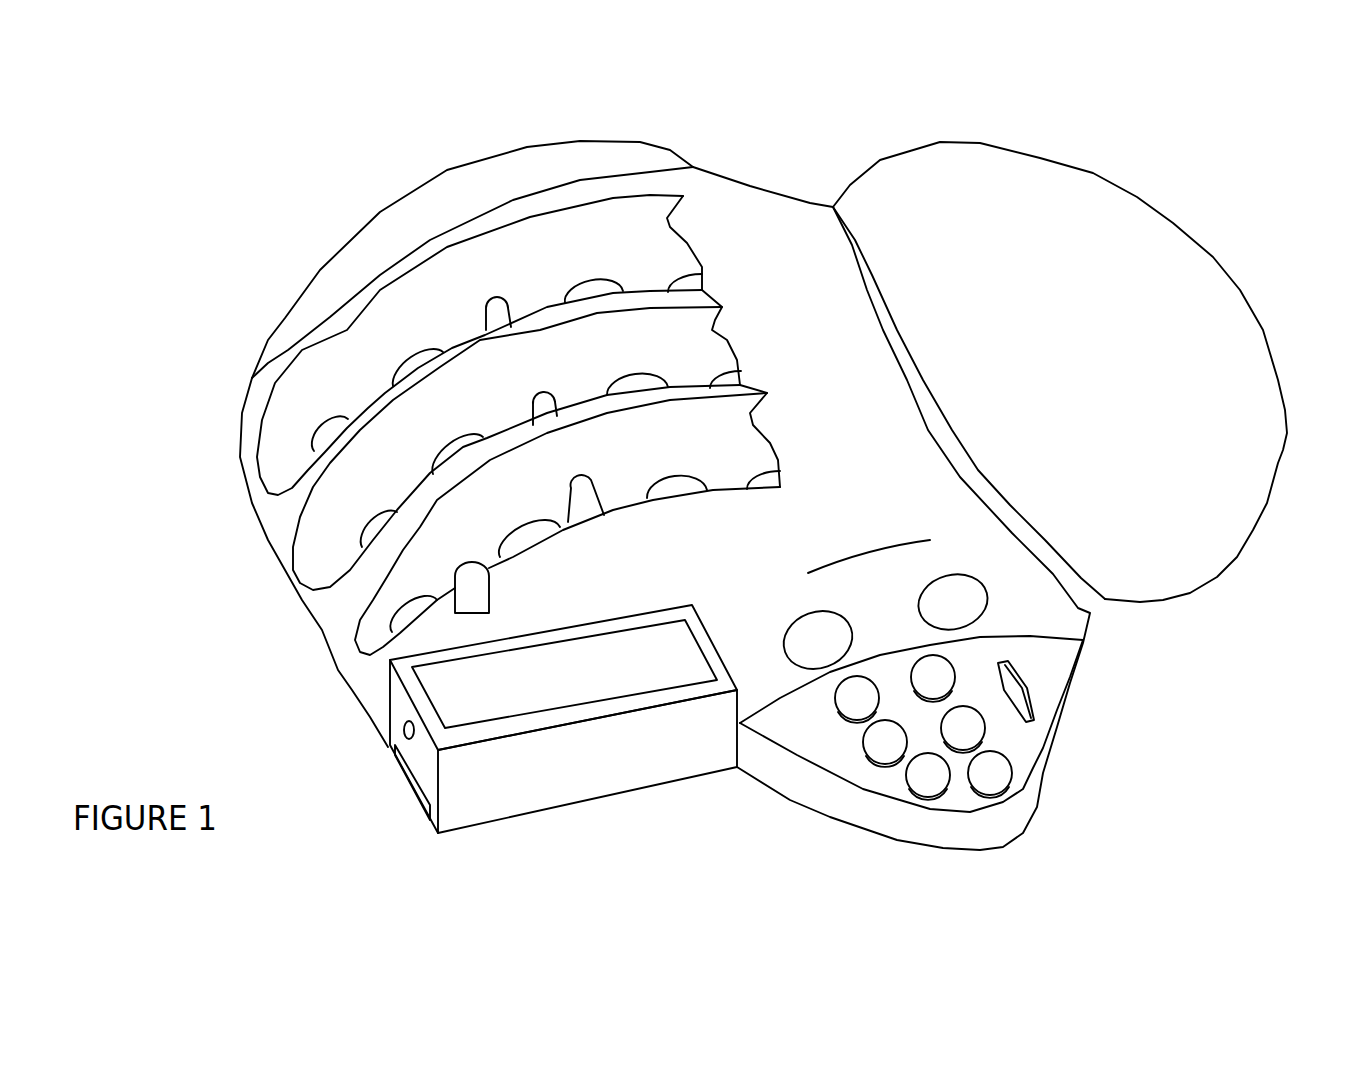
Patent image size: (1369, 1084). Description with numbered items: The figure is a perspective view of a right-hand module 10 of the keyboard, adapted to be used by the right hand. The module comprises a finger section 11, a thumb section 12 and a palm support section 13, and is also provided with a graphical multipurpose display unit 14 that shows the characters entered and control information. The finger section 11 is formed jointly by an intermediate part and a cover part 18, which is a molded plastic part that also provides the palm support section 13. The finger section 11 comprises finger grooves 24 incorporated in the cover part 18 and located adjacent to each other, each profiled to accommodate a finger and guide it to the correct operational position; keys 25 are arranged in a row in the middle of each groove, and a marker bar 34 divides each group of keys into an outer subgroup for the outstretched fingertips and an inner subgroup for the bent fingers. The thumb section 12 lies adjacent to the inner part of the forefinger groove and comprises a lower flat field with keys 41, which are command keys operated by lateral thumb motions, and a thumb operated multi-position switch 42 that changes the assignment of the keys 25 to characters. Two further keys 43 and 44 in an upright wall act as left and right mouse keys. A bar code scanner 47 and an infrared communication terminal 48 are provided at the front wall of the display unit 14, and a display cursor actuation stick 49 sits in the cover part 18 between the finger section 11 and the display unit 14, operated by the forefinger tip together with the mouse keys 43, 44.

The right-hand module 10 is at (232, 238).
The finger section 11 is at (285, 520).
The thumb section 12 is at (1030, 755).
The palm support section 13 is at (1156, 317).
The graphical multipurpose display unit 14 is at (562, 683).
The cover part 18 is at (800, 240).
The finger grooves 24 is at (365, 628).
The keys 25 is at (363, 527).
The marker bar 34 is at (505, 310).
The keys 41 is at (928, 785).
The thumb operated multi-position switch 42 is at (1035, 697).
The key 43 is at (808, 627).
The key 44 is at (940, 595).
The bar code scanner 47 is at (413, 789).
The infrared communication terminal 48 is at (400, 727).
The display cursor actuation stick 49 is at (497, 586).